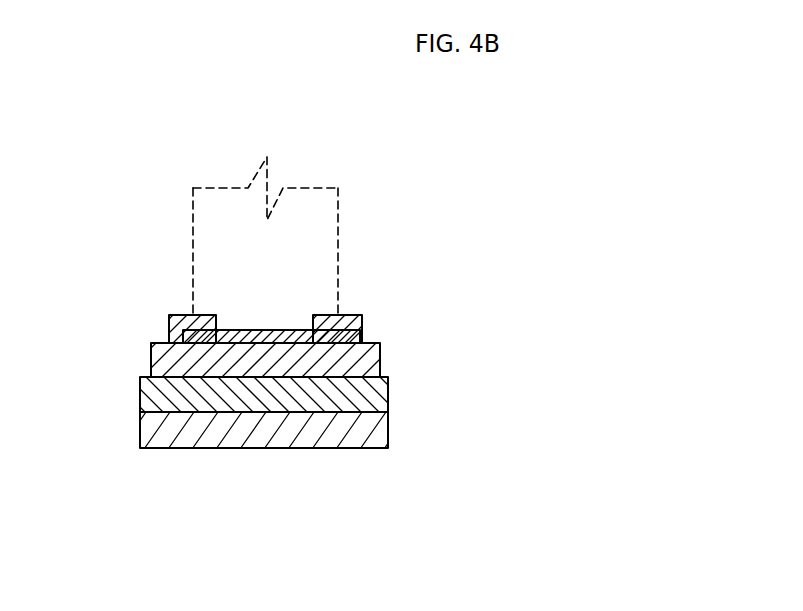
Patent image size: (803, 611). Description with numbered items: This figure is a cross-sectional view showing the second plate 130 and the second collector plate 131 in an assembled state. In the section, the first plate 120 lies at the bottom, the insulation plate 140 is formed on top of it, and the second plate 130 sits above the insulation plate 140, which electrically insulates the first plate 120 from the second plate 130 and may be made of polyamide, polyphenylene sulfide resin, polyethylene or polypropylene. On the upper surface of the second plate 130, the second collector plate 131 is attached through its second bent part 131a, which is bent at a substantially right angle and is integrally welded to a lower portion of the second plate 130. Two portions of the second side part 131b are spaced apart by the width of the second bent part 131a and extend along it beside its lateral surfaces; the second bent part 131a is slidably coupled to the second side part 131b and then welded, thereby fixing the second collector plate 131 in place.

The first plate 120 is at (390, 432).
The insulation plate 140 is at (386, 397).
The second plate 130 is at (380, 358).
The second collector plate 131 is at (205, 208).
The second bent part 131a is at (297, 332).
The second side part 131b is at (168, 323).